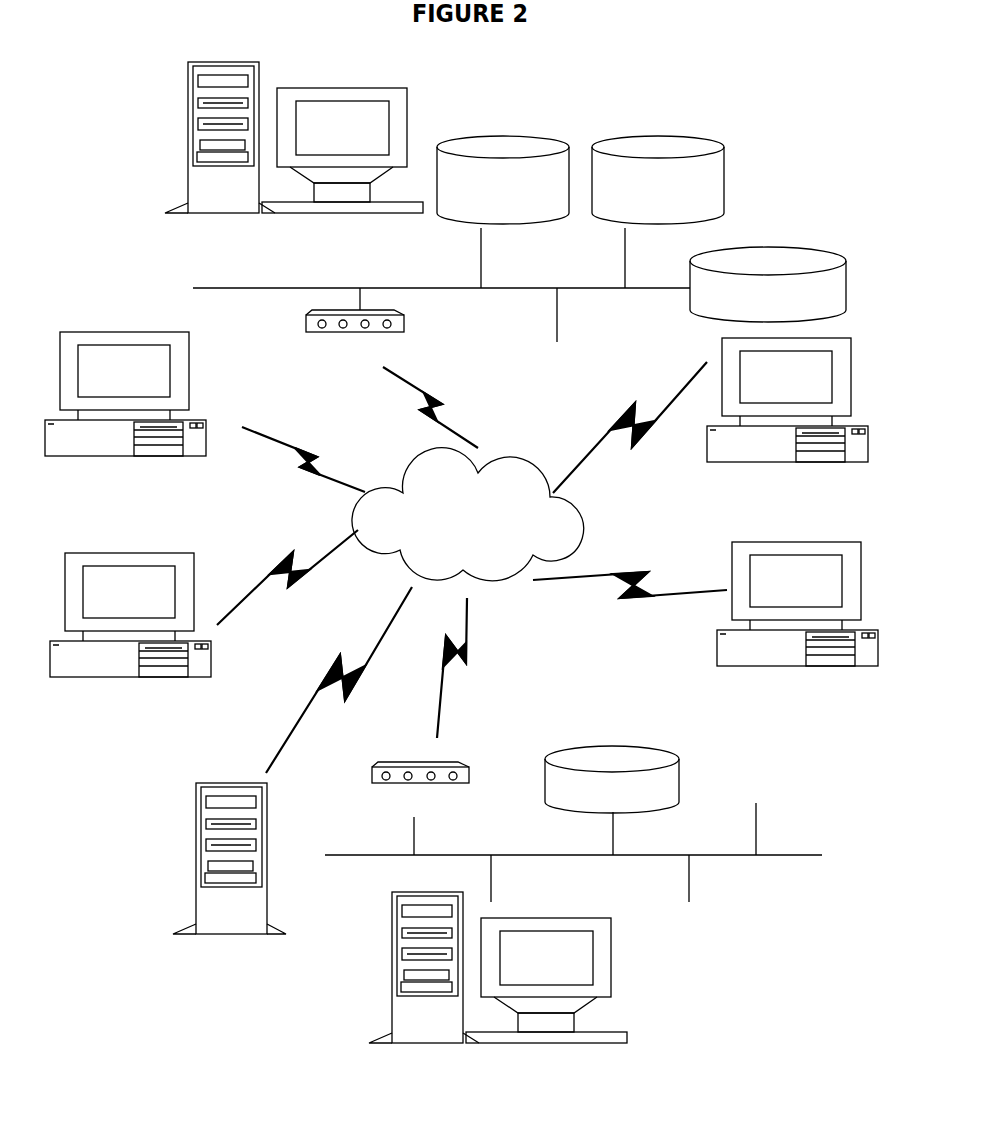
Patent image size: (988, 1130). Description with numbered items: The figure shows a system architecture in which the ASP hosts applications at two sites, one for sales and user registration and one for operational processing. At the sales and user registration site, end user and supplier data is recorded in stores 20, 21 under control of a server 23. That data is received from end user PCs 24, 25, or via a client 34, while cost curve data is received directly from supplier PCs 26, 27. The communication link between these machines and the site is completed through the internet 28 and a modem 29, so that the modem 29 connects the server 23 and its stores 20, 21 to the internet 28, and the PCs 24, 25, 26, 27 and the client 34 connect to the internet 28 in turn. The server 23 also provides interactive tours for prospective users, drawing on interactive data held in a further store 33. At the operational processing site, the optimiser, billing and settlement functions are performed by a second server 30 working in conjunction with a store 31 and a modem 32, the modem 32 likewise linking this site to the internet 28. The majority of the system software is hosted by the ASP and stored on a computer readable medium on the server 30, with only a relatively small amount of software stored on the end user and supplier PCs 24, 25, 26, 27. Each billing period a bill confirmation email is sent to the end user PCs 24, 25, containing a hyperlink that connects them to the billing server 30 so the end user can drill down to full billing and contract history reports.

The store 20 is at (503, 180).
The store 21 is at (658, 180).
The server 23 is at (283, 288).
The end user PC 24 is at (125, 409).
The end user PC 25 is at (130, 632).
The supplier PC 26 is at (797, 619).
The supplier PC 27 is at (787, 418).
The internet 28 is at (472, 567).
The modem 29 is at (358, 327).
The server 30 is at (498, 989).
The store 31 is at (612, 779).
The modem 32 is at (416, 808).
The store 33 is at (768, 284).
The client 34 is at (230, 872).